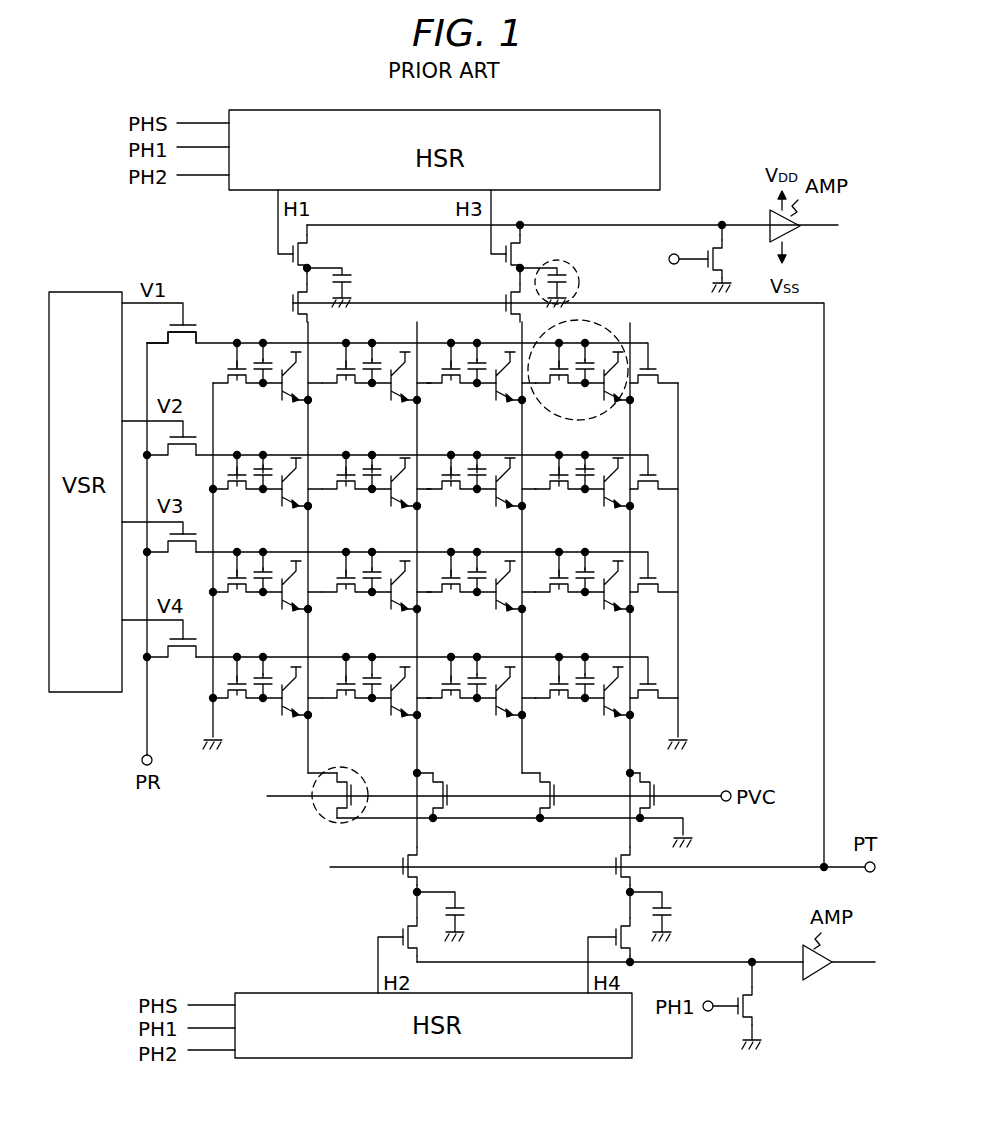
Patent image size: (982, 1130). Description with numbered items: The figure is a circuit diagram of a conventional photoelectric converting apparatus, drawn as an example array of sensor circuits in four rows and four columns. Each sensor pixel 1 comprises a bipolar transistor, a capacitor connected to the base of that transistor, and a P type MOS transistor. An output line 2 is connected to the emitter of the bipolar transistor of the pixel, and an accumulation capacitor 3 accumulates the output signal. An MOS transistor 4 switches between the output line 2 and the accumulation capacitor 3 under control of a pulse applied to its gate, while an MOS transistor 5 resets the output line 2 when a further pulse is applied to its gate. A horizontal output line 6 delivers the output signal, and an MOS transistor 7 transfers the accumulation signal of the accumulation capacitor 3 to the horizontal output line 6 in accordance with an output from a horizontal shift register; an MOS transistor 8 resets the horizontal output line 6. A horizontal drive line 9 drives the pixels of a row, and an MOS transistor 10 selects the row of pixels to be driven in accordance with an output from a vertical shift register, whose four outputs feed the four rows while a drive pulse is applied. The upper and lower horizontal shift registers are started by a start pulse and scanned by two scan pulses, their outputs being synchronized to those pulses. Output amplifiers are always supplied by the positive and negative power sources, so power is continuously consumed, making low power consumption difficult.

The sensor pixel 1 is at (605, 322).
The output line 2 is at (630, 428).
The accumulation capacitor 3 is at (578, 268).
The MOS transistor 4 is at (503, 302).
The MOS transistor 5 is at (359, 771).
The horizontal output line 6 is at (690, 220).
The MOS transistor 7 is at (503, 262).
The MOS transistor 8 is at (727, 260).
The horizontal drive line 9 is at (332, 347).
The MOS transistor 10 is at (200, 329).